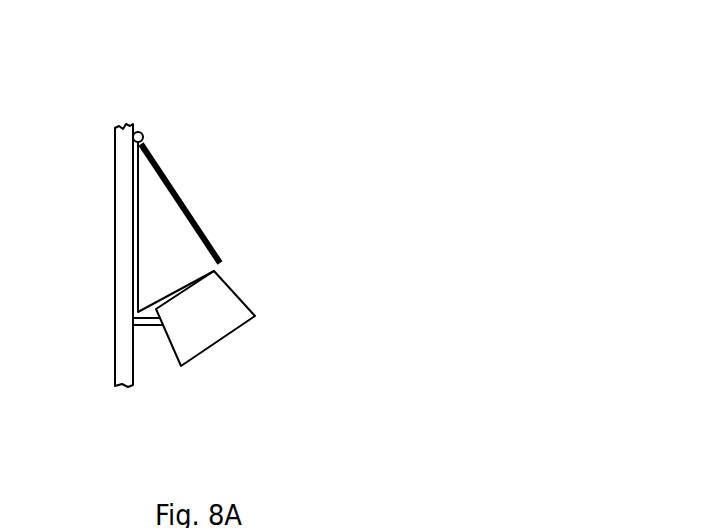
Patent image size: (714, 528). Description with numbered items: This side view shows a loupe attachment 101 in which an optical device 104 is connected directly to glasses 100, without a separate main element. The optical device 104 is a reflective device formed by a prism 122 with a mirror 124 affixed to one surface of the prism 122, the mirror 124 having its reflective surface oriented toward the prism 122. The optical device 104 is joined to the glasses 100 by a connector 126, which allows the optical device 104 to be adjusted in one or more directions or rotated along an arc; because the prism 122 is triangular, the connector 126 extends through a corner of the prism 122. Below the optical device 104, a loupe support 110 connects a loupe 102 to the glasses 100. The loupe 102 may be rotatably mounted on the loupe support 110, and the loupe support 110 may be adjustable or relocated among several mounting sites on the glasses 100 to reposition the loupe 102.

The glasses 100 is at (125, 150).
The loupe attachment 101 is at (150, 109).
The loupes 102 is at (223, 314).
The optical device 104 is at (180, 172).
The loupe support 110 is at (152, 326).
The prism 122 is at (173, 270).
The mirror 124 is at (187, 203).
The connector 126 is at (137, 127).